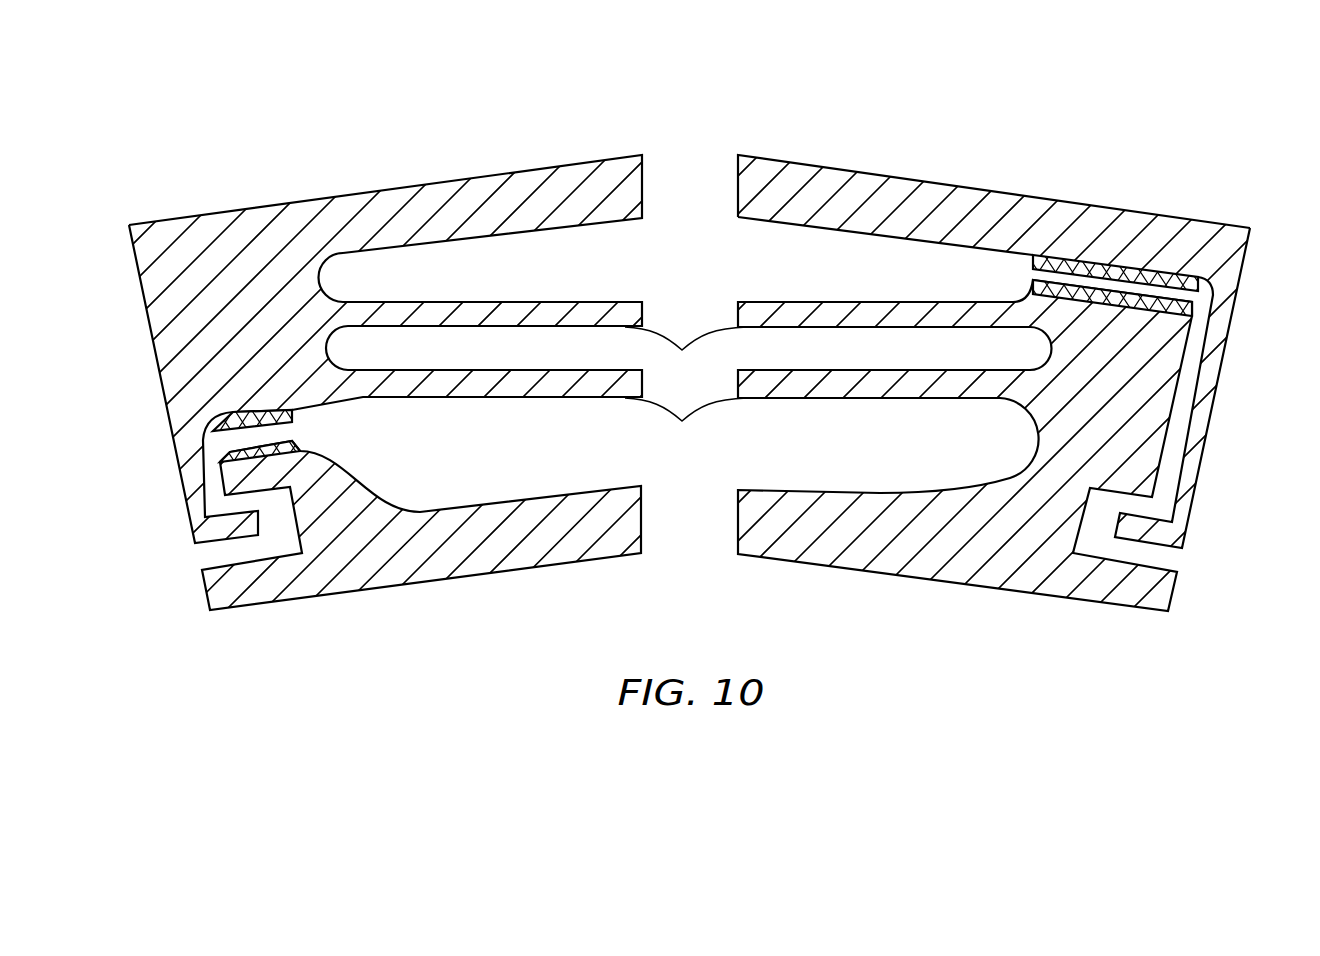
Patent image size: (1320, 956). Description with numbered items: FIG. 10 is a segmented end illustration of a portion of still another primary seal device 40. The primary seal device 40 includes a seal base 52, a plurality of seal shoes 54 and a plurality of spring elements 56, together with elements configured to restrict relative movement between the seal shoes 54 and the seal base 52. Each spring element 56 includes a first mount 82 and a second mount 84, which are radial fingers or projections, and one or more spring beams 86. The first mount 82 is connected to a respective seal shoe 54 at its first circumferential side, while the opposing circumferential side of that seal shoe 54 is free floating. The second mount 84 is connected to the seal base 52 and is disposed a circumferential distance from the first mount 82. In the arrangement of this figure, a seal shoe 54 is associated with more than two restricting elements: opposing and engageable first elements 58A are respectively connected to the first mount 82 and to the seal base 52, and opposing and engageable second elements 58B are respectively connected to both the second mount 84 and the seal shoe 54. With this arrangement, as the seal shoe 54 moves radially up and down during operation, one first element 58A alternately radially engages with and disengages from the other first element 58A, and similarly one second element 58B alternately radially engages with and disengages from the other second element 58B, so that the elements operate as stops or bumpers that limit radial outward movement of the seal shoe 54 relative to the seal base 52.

The primary seal device 40 is at (1121, 102).
The seal base 52 is at (577, 161).
The seal shoe 54 is at (538, 568).
The spring element 56 is at (486, 300).
The first element 58A is at (1200, 277).
The second element 58B is at (222, 422).
The first mount 82 is at (1173, 407).
The second mount 84 is at (157, 362).
The spring beam 86 is at (686, 388).